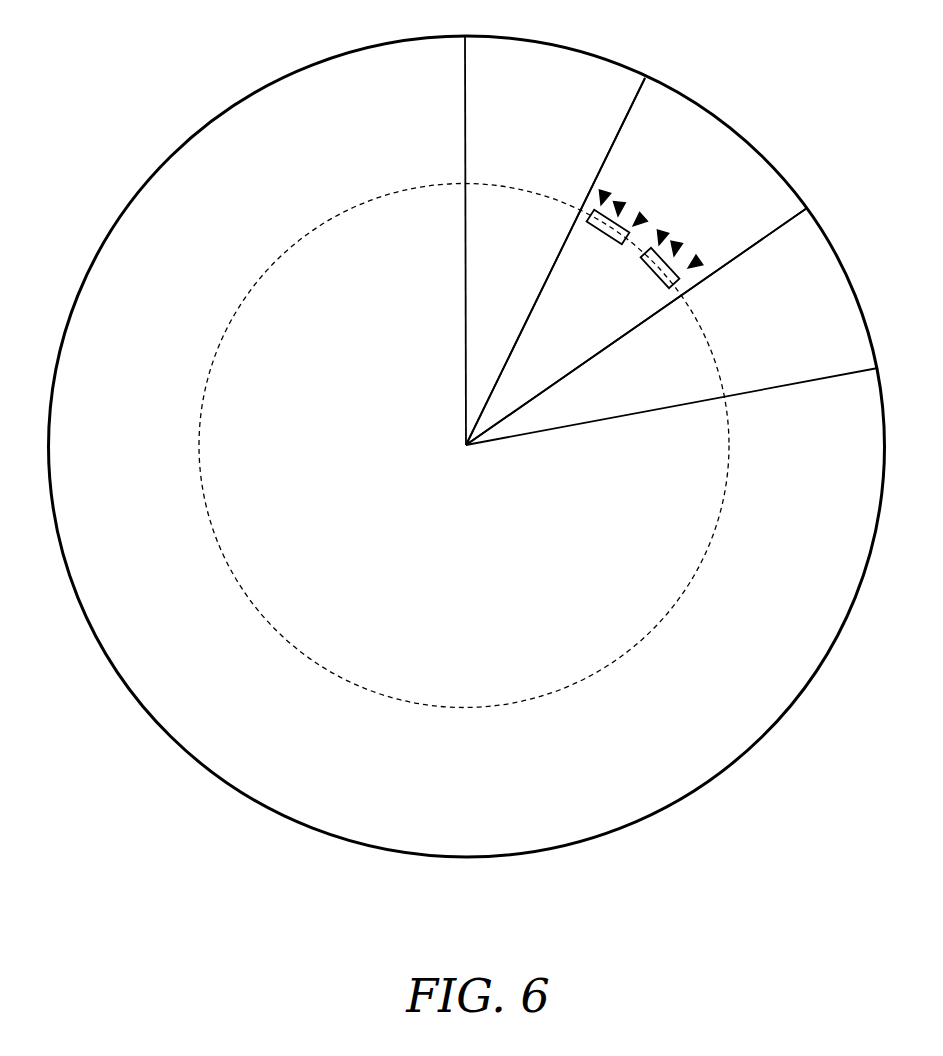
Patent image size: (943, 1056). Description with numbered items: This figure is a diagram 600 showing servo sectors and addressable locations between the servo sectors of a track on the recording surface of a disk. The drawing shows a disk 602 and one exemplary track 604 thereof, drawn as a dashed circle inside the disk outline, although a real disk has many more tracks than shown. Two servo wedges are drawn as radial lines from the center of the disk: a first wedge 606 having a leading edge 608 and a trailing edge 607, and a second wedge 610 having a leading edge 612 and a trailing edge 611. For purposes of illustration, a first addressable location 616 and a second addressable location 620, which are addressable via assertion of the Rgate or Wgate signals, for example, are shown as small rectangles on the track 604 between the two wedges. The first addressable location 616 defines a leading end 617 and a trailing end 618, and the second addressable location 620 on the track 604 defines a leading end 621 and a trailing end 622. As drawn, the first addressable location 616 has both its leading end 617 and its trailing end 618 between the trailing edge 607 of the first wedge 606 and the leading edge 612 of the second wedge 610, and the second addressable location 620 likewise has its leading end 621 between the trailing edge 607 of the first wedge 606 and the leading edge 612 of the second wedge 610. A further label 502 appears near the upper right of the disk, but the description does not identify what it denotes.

The wafer inspection layout 600 is at (38, 163).
The wafer 502 is at (855, 152).
The disk 602 is at (232, 100).
The track 604 is at (388, 195).
The first wedge 606 is at (603, 87).
The trailing edge of the first wedge 607 is at (599, 177).
The leading edge of the first wedge 608 is at (462, 143).
The second wedge 610 is at (850, 307).
The trailing edge of the second wedge 611 is at (830, 378).
The leading edge of the second wedge 612 is at (718, 270).
The first addressable location 616 is at (619, 202).
The leading end of the first addressable location 617 is at (605, 192).
The trailing end of the first addressable location 618 is at (643, 217).
The second addressable location 620 is at (677, 242).
The leading end of the second addressable location 621 is at (663, 232).
The trailing end of the second addressable location 622 is at (699, 260).